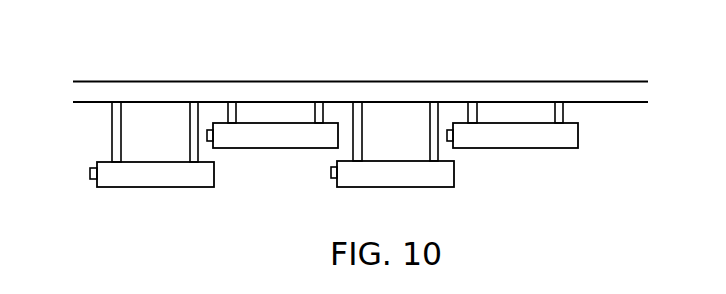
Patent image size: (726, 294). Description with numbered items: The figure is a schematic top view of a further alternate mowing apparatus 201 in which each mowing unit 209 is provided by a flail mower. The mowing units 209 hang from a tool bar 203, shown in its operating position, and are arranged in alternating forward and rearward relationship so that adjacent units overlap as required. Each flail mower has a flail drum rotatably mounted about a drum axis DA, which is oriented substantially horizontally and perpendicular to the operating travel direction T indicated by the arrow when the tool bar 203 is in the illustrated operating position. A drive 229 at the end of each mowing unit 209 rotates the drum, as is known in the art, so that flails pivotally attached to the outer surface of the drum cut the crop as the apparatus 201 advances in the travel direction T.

The alternate apparatus 201 is at (573, 43).
The tool bar 203 is at (376, 81).
The mowing unit 209 is at (177, 187).
The drive 229 is at (330, 174).
The drum axis DA is at (455, 174).
The operating travel direction T is at (310, 58).